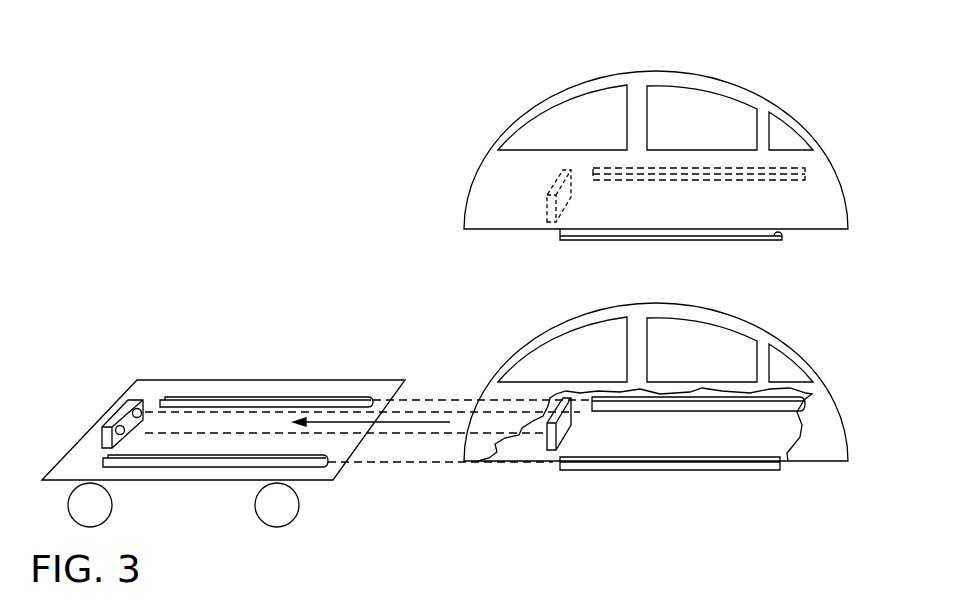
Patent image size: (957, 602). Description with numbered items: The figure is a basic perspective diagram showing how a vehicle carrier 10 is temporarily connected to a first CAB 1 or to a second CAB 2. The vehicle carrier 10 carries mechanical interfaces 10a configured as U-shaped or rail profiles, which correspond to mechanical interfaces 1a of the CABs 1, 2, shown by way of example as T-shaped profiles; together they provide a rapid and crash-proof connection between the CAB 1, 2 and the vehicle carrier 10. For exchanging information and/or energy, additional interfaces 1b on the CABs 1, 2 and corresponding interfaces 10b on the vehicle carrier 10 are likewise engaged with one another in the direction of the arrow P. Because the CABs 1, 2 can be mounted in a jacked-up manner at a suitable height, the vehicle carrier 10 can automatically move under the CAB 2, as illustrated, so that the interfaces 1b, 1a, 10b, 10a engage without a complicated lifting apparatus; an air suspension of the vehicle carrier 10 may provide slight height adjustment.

The first CAB 1 is at (746, 74).
The mechanical interfaces of the CABs 1a is at (770, 233).
The additional interfaces of the CABs 1b is at (550, 181).
The second CAB 2 is at (804, 338).
The vehicle carrier 10 is at (79, 410).
The mechanical interfaces of the vehicle carrier 10a is at (253, 462).
The additional interfaces of the vehicle carrier 10b is at (120, 430).
The arrow P is at (424, 422).